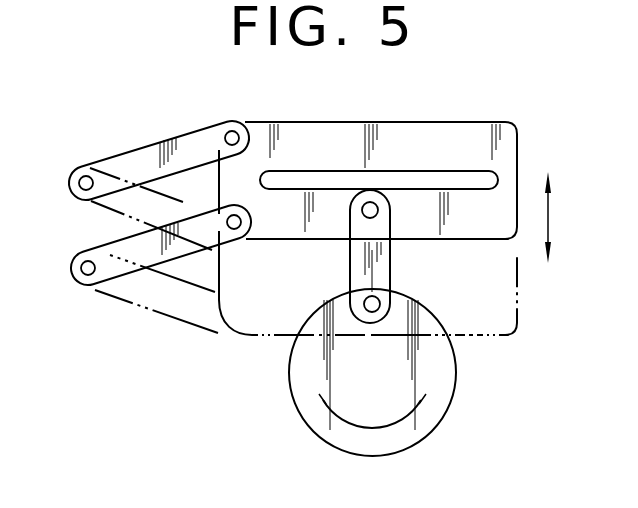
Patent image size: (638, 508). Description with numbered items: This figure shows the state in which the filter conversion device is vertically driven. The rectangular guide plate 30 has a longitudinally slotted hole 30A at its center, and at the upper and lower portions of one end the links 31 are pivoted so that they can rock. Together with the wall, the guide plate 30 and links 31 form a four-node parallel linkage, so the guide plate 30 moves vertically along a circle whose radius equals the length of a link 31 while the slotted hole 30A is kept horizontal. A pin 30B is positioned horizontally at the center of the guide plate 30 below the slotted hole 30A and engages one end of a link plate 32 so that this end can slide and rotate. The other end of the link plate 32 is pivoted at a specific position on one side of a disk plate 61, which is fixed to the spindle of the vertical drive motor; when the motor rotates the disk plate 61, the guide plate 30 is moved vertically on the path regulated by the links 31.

The guide plate 30 is at (366, 122).
The slotted hole 30A is at (461, 180).
The pin 30B is at (378, 211).
The links 31 is at (135, 153).
The link plate 32 is at (350, 277).
The disk plate 61 is at (450, 376).